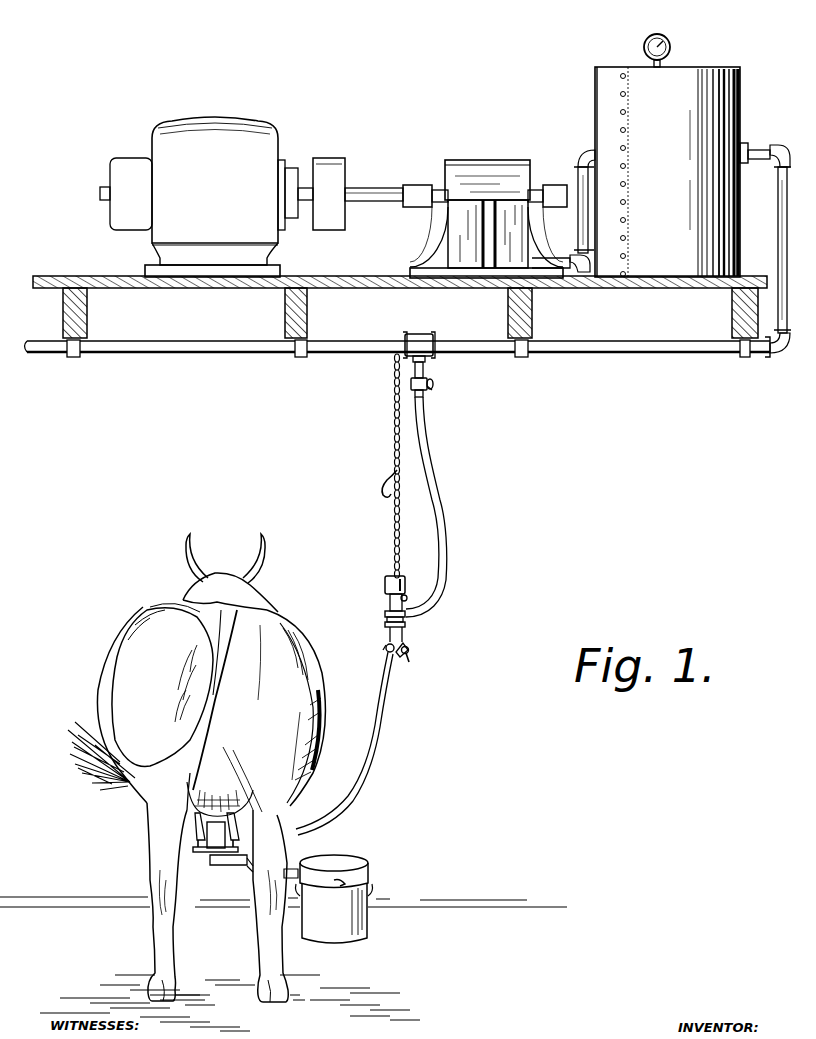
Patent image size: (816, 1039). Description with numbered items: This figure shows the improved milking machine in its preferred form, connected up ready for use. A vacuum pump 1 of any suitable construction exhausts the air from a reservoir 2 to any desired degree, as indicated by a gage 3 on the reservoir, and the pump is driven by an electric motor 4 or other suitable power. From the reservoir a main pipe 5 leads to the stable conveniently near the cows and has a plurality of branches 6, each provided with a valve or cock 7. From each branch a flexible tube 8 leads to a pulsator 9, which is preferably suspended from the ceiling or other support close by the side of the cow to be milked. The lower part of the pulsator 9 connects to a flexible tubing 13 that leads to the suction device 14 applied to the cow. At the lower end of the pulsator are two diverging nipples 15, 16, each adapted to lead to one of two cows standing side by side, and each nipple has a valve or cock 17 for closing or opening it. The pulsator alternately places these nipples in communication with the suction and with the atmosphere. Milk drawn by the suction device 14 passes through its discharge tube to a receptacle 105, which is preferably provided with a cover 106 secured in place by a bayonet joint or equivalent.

The vacuum pump 1 is at (472, 160).
The reservoir 2 is at (595, 78).
The gage 3 is at (668, 38).
The electric motor 4 is at (205, 127).
The main pipe 5 is at (757, 143).
The branch 6 is at (423, 372).
The valve 7 is at (431, 389).
The flexible tube 8 is at (436, 497).
The pulsator 9 is at (388, 604).
The flexible tubing 13 is at (364, 774).
The suction device 14 is at (200, 830).
The diverging nipple 15 is at (386, 648).
The diverging nipple 16 is at (404, 657).
The valve 17 is at (405, 645).
The receptacle 105 is at (347, 913).
The cover 106 is at (343, 860).